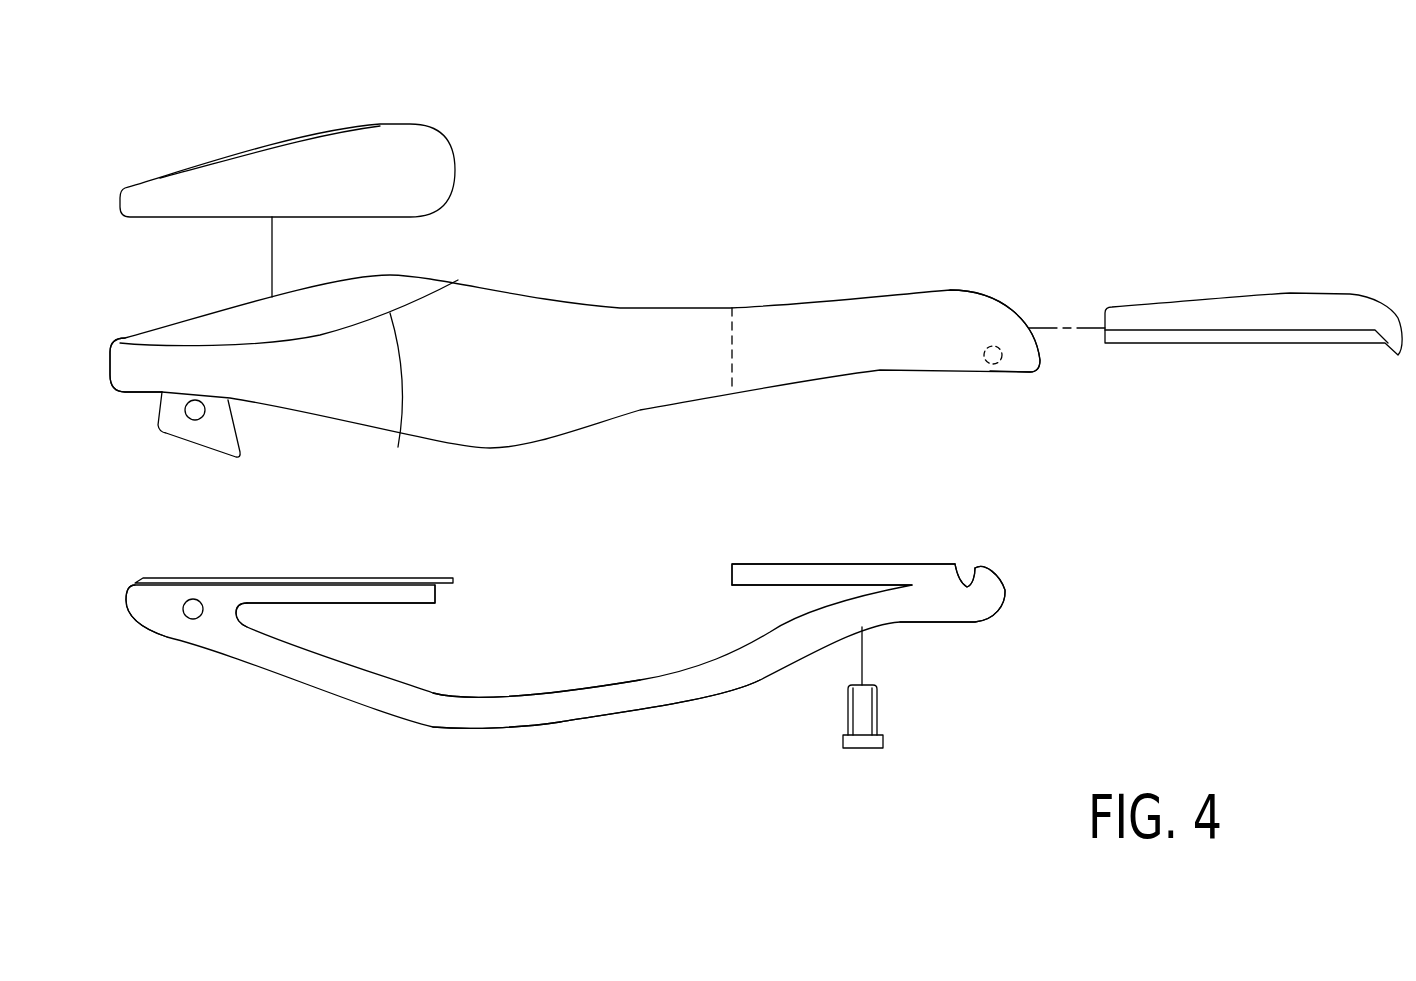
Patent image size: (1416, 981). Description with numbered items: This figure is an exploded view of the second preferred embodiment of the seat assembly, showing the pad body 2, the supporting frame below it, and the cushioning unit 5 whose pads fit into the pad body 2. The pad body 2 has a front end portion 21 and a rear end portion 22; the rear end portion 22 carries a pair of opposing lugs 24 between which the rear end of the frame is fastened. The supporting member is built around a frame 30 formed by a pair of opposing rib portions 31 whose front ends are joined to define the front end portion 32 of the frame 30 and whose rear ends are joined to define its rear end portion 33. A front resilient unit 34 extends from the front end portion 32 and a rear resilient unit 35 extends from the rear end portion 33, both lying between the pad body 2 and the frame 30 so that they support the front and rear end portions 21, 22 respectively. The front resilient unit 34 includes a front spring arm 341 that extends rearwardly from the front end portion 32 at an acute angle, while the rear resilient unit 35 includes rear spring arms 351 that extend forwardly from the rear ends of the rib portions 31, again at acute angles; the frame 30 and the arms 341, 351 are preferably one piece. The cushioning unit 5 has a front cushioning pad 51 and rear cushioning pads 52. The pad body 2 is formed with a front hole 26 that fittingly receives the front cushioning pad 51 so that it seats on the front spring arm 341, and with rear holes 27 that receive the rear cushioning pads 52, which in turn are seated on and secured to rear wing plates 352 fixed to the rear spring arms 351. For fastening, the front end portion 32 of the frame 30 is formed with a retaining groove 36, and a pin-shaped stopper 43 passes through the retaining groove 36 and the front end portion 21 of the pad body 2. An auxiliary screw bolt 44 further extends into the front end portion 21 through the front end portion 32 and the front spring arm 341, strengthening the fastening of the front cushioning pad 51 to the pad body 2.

The pad body 2 is at (580, 285).
The cushioning unit 5 is at (377, 110).
The front end portion of the pad body 21 is at (1015, 372).
The rear end portion of the pad body 22 is at (123, 360).
The lugs 24 is at (168, 420).
The front hole 26 is at (732, 358).
The rear holes 27 is at (397, 399).
The frame 30 is at (640, 730).
The rib portions 31 is at (540, 705).
The front end portion of the frame 32 is at (927, 612).
The rear end portion of the frame 33 is at (144, 616).
The front resilient unit 34 is at (912, 562).
The rear resilient unit 35 is at (303, 603).
The retaining groove 36 is at (963, 588).
The stopper 43 is at (998, 346).
The auxiliary screw bolt 44 is at (858, 750).
The front cushioning pad 51 is at (1316, 314).
The rear cushioning pads 52 is at (290, 155).
The front spring arm 341 is at (733, 575).
The rear spring arms 351 is at (382, 592).
The rear wing plates 352 is at (352, 578).